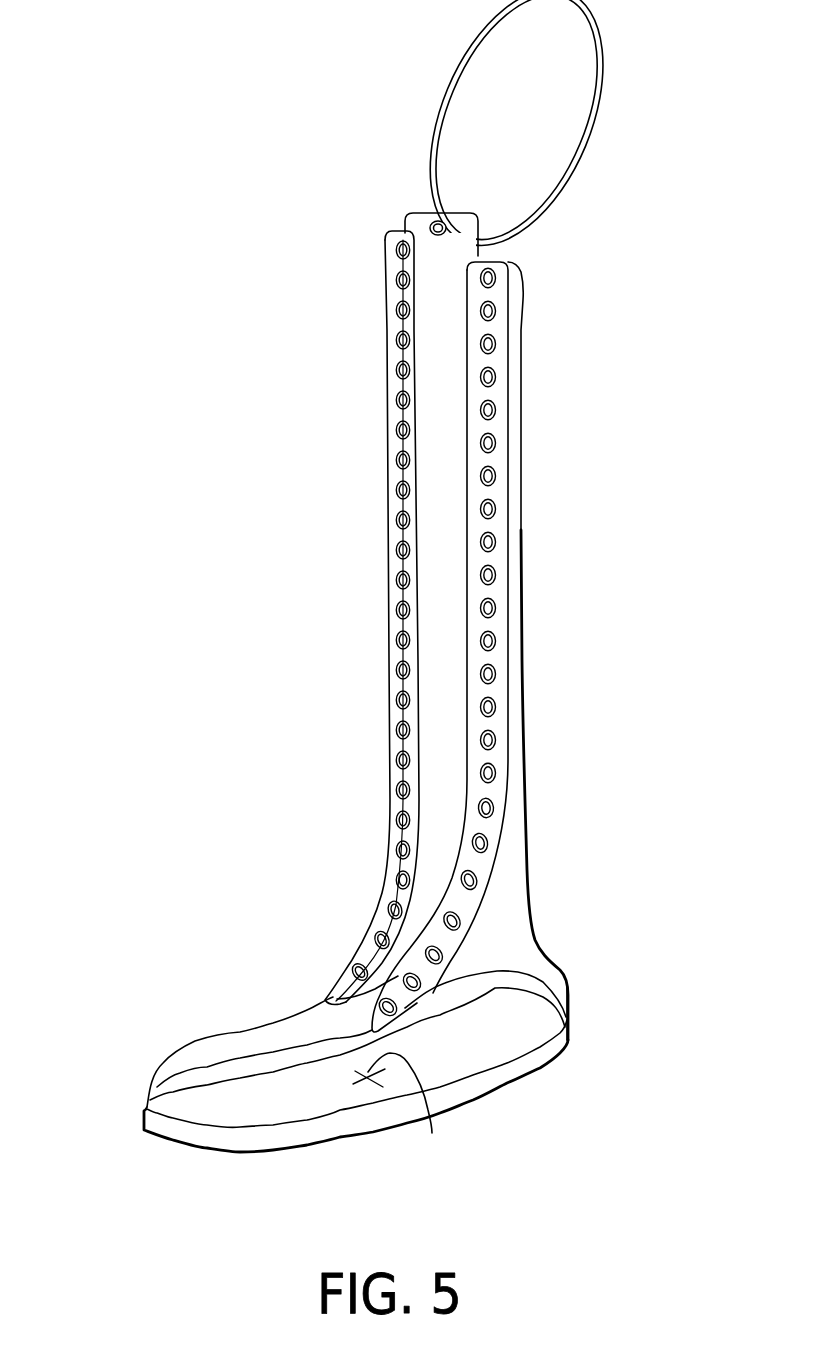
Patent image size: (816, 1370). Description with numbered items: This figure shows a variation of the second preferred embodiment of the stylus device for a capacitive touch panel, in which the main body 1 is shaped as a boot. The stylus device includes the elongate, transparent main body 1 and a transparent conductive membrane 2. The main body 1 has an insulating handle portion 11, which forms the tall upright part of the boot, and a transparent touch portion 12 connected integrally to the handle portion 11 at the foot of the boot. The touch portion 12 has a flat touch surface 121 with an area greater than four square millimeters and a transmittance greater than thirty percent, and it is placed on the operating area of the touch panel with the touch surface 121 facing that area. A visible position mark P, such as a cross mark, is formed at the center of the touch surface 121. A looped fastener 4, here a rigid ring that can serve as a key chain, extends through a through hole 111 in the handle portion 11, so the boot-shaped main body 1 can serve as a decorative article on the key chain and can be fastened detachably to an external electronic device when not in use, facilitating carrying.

The main body 1 is at (372, 356).
The handle portion 11 is at (427, 630).
The through hole 111 is at (408, 220).
The touch portion 12 is at (203, 1050).
The touch surface 121 is at (236, 1152).
The transparent conductive membrane 2 is at (533, 637).
The looped fastener 4 is at (605, 60).
The position mark P is at (432, 1133).